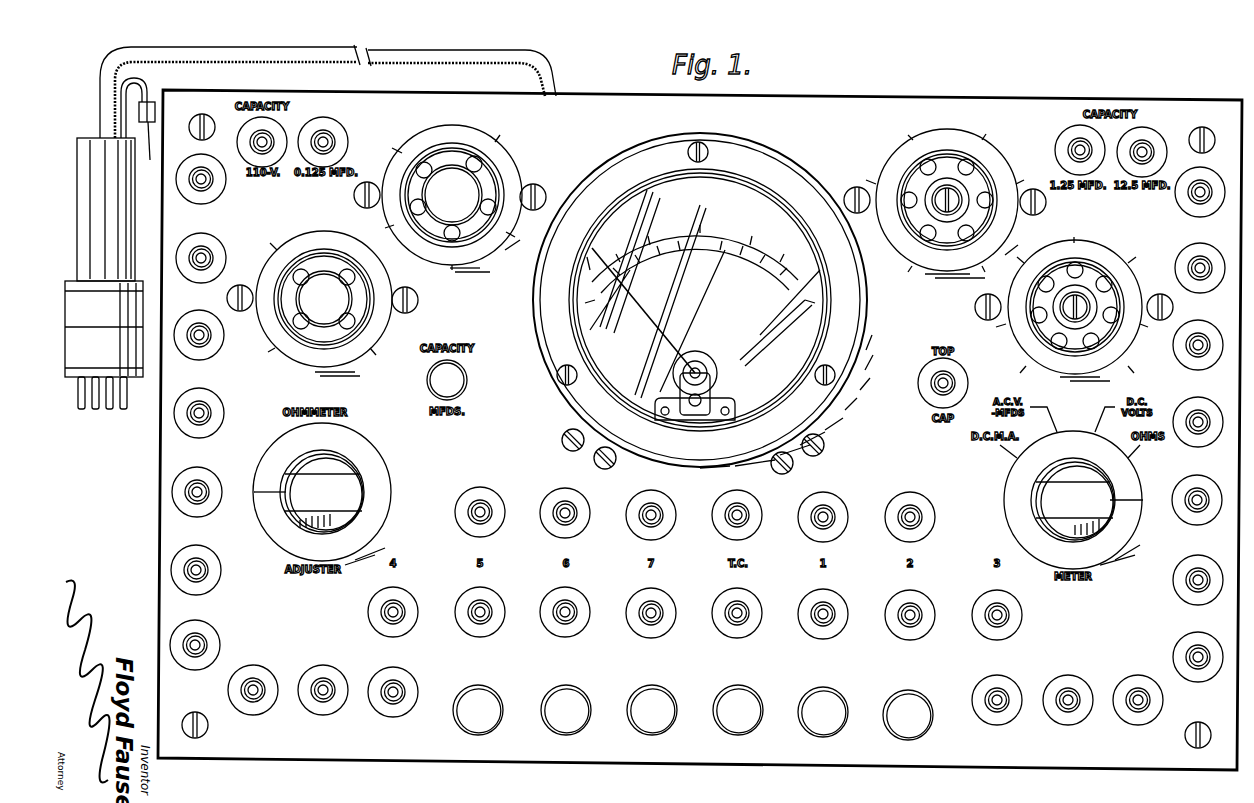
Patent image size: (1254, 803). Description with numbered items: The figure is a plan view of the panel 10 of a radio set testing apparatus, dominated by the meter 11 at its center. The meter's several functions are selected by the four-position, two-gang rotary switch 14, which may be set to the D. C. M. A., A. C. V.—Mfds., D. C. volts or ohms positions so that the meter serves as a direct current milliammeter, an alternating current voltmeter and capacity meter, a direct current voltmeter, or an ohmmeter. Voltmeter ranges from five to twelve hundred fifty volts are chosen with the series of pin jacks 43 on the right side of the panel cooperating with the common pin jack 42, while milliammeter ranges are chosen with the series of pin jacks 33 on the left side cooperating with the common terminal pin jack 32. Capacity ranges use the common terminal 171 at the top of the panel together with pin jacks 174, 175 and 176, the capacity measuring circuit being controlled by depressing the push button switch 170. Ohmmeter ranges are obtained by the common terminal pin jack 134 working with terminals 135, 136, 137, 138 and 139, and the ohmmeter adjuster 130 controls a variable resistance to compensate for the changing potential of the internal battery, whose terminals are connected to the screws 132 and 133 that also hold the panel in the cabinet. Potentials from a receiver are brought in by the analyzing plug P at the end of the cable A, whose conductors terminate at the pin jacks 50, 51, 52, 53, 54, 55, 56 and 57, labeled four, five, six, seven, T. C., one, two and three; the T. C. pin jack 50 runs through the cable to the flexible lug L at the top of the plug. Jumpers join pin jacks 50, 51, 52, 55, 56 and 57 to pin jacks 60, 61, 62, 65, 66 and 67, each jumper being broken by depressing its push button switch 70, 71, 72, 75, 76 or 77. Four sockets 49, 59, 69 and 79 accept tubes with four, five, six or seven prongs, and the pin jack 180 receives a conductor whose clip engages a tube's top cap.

The panel 10 is at (868, 100).
The meter 11 is at (774, 168).
The rotary switch 14 is at (1012, 488).
The common terminal pin jack 32 is at (222, 645).
The pin jacks 33 is at (218, 184).
The common pin jack 42 is at (1180, 652).
The pin jacks 43 is at (1180, 200).
The socket 49 is at (345, 352).
The T. C. pin jack 50 is at (750, 627).
The pin jack 51 is at (836, 628).
The pin jack 52 is at (920, 630).
The pin jack 53 is at (1022, 616).
The pin jack 54 is at (408, 624).
The pin jack 55 is at (493, 624).
The pin jack 56 is at (578, 624).
The pin jack 57 is at (663, 626).
The socket 59 is at (485, 248).
The pin jack 60 is at (756, 503).
The pin jack 61 is at (842, 503).
The pin jack 62 is at (933, 513).
The pin jack 65 is at (472, 492).
The pin jack 66 is at (553, 497).
The pin jack 67 is at (660, 497).
The socket 69 is at (942, 258).
The push button switch 70 is at (748, 730).
The push button switch 71 is at (835, 732).
The push button switch 72 is at (918, 733).
The push button switch 75 is at (488, 730).
The push button switch 76 is at (575, 730).
The push button switch 77 is at (662, 730).
The socket 79 is at (1016, 333).
The ohmmeter adjuster 130 is at (372, 470).
The screw 132 is at (1195, 748).
The screw 133 is at (1208, 128).
The common terminal pin jack 134 is at (1145, 682).
The terminal 135 is at (1080, 682).
The terminal 136 is at (1010, 682).
The terminal 137 is at (407, 680).
The terminal 138 is at (336, 676).
The terminal 139 is at (262, 676).
The push button switch 170 is at (466, 383).
The common terminal 171 is at (248, 128).
The pin jack 174 is at (337, 137).
The pin jack 175 is at (1060, 145).
The pin jack 176 is at (1150, 142).
The pin jack 180 is at (925, 393).
The analyzing plug P is at (88, 140).
The cable A is at (557, 70).
The lug L is at (151, 150).